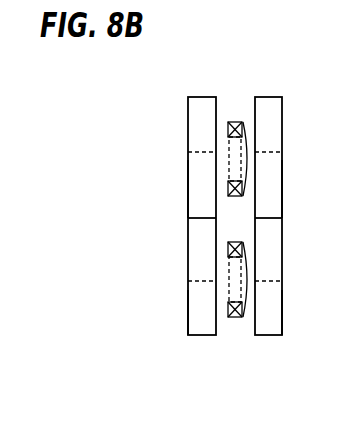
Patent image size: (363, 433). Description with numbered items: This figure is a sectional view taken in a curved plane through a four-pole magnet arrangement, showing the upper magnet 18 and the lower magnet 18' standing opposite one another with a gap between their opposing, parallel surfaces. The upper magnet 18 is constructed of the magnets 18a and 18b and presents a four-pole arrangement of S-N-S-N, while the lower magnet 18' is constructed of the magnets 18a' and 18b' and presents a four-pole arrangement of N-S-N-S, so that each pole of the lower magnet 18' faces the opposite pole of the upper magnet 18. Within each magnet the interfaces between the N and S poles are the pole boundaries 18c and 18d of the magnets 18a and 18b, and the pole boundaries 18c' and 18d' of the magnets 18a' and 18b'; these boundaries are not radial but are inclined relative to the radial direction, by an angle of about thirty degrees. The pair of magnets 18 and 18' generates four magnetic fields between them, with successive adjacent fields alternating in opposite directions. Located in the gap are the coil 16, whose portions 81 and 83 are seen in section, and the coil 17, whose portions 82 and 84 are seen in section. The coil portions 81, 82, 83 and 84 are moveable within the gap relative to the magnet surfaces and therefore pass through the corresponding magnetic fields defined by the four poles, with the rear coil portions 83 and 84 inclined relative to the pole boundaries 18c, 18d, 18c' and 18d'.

The coil 16 is at (267, 53).
The coil 17 is at (267, 377).
The upper magnet 18 is at (179, 189).
The lower magnet 18' is at (291, 188).
The magnet 18a is at (173, 185).
The magnet 18b is at (176, 259).
The pole boundary 18c is at (176, 135).
The pole boundary 18d is at (173, 306).
The magnet 18a' is at (298, 185).
The magnet 18b' is at (294, 259).
The pole boundary 18c' is at (294, 135).
The pole boundary 18d' is at (298, 306).
The coil portion 81 is at (231, 121).
The coil portion 82 is at (232, 318).
The rear coil portion 83 is at (243, 122).
The rear coil portion 84 is at (243, 317).